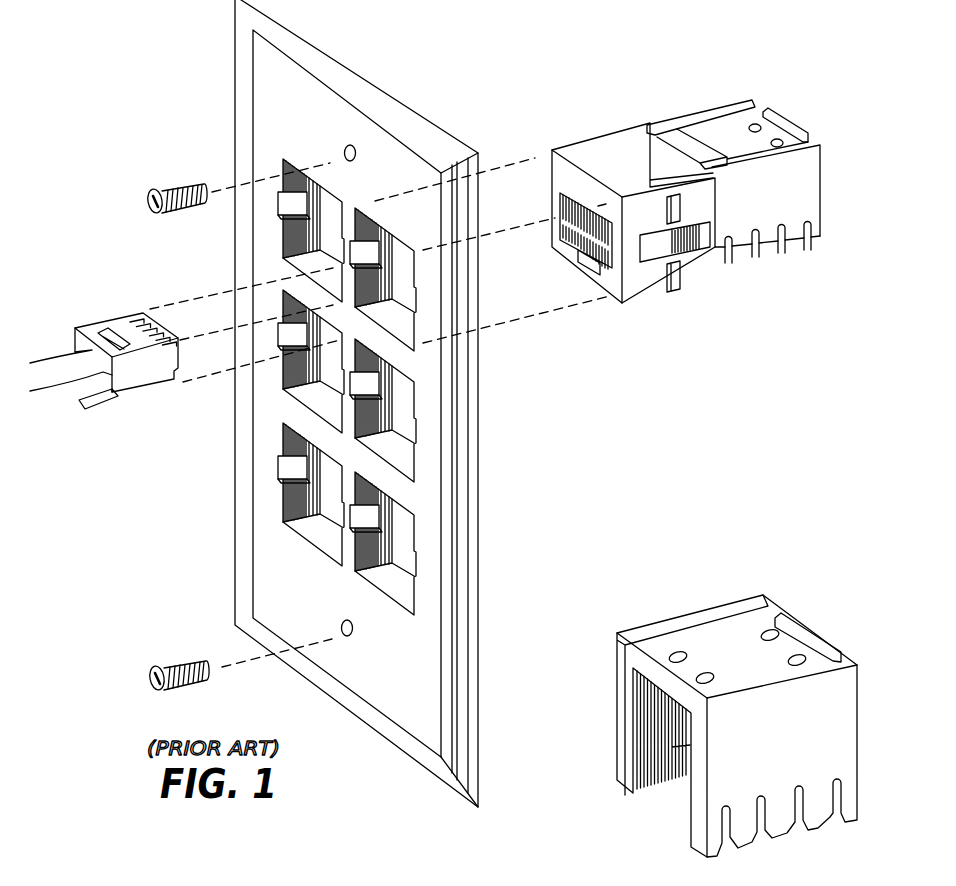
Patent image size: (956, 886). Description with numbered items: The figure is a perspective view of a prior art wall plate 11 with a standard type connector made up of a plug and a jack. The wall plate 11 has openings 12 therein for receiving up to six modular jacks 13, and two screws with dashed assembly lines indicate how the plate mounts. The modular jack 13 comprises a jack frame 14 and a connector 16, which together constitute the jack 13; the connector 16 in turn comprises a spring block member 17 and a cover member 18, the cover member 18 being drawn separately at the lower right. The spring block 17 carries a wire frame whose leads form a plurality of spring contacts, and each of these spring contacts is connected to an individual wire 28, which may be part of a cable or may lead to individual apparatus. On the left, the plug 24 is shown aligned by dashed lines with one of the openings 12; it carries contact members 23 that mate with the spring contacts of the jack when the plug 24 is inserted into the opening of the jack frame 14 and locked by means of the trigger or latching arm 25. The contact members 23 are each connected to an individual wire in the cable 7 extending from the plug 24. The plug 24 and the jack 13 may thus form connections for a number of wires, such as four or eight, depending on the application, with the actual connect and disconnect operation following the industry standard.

The cable 7 is at (71, 378).
The wall plate 11 is at (396, 92).
The openings 12 is at (400, 593).
The modular jack 13 is at (725, 110).
The jack frame 14 is at (586, 141).
The connector 16 is at (800, 206).
The spring block member 17 is at (846, 880).
The cover member 18 is at (838, 762).
The contact members 23 is at (176, 327).
The plug 24 is at (93, 328).
The latching arm 25 is at (107, 404).
The wire 28 is at (807, 251).